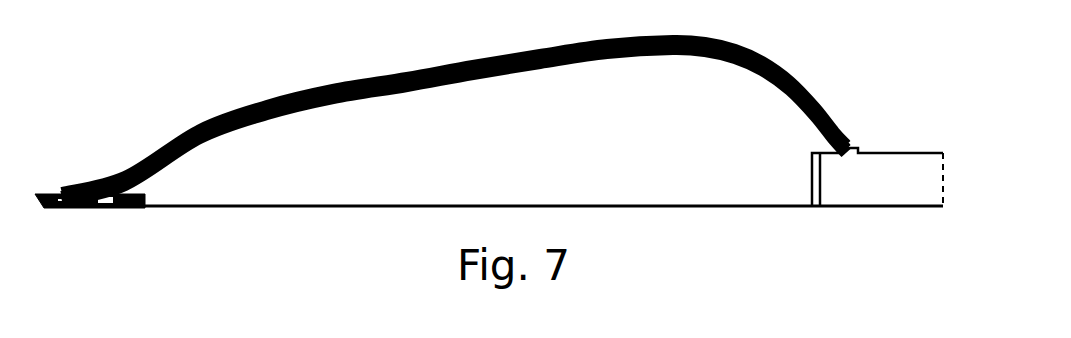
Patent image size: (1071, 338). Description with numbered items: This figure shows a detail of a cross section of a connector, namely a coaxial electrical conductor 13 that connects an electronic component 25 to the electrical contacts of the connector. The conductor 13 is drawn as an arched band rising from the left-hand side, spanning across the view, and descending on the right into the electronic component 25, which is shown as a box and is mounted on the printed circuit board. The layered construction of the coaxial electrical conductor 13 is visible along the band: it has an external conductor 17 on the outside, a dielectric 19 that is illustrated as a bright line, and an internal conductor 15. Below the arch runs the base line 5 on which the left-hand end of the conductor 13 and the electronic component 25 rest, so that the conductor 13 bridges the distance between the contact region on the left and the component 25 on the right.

The floor / ground surface 5 is at (538, 204).
The coaxial electrical conductor 13 is at (454, 113).
The internal conductor 15 is at (393, 91).
The external conductor 17 is at (345, 84).
The dielectric 19 is at (540, 64).
The electronic component 25 is at (893, 190).